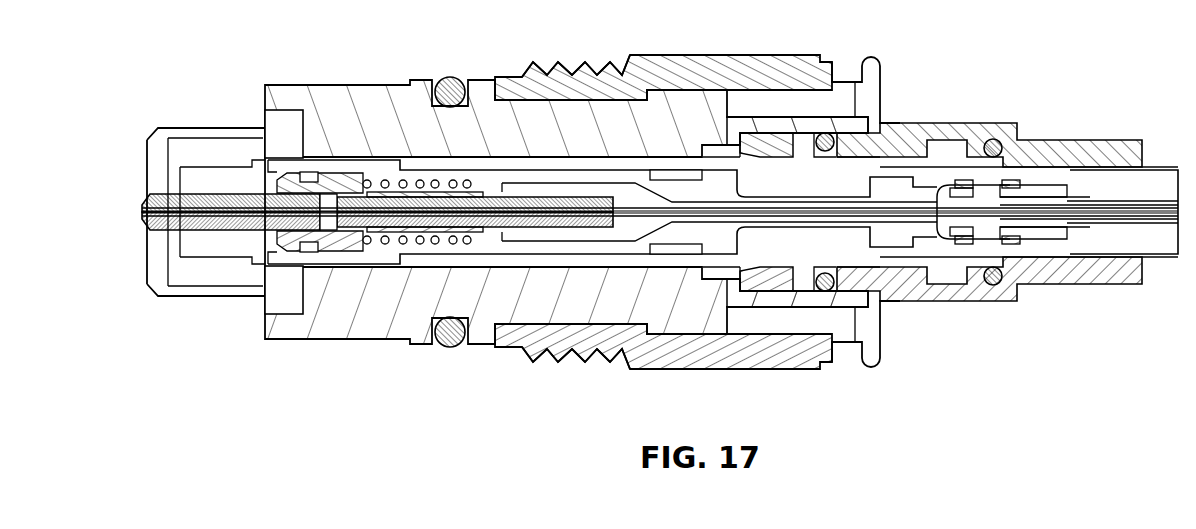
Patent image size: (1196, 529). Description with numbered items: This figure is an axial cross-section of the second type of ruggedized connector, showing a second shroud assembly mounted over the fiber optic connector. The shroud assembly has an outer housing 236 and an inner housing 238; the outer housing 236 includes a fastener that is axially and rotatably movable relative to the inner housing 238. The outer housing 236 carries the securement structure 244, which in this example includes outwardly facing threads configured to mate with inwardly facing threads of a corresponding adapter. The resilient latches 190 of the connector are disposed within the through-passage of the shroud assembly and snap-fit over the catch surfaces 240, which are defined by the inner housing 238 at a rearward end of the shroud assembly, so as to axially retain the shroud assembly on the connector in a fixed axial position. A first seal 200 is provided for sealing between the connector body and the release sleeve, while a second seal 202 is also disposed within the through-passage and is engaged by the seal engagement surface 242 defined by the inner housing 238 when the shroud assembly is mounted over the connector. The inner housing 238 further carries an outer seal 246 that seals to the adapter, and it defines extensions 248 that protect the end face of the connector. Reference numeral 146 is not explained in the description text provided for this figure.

The contact bore 146 is at (218, 258).
The resilient latches 190 is at (785, 133).
The first seal 200 is at (997, 138).
The second seal 202 is at (830, 133).
The outer housing 236 is at (657, 56).
The inner housing 238 is at (327, 341).
The catch surfaces 240 is at (797, 118).
The seal engagement surface 242 is at (828, 292).
The securement structure 244 is at (577, 65).
The outer seal 246 is at (448, 76).
The extensions 248 is at (197, 136).